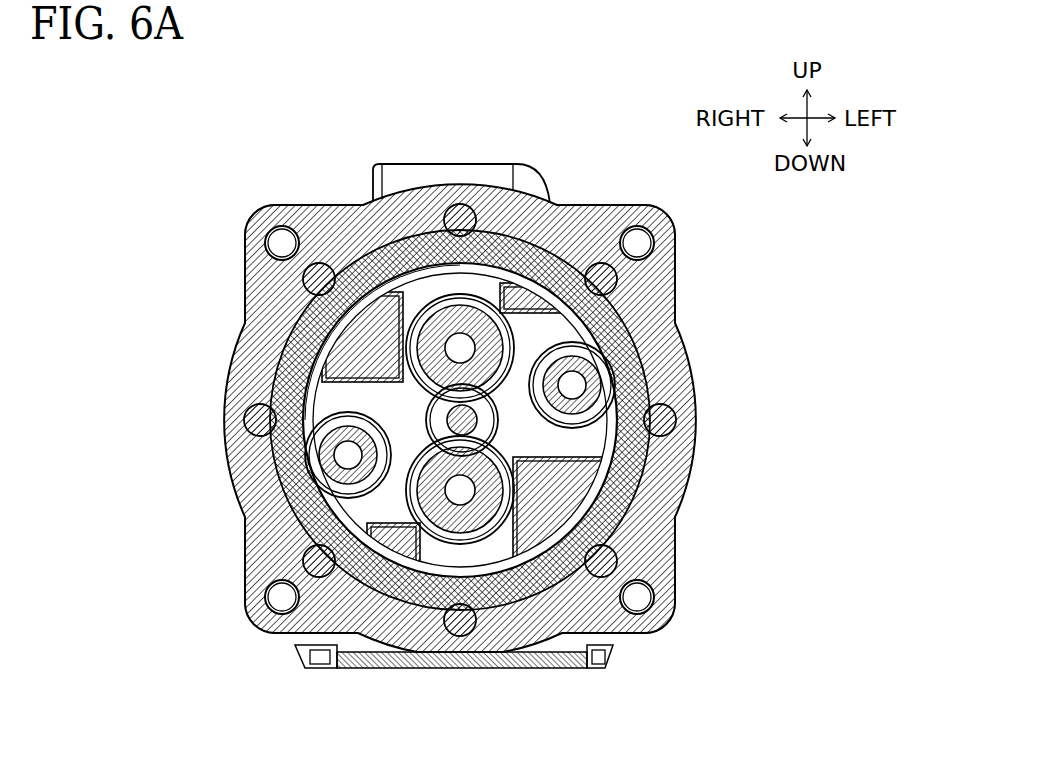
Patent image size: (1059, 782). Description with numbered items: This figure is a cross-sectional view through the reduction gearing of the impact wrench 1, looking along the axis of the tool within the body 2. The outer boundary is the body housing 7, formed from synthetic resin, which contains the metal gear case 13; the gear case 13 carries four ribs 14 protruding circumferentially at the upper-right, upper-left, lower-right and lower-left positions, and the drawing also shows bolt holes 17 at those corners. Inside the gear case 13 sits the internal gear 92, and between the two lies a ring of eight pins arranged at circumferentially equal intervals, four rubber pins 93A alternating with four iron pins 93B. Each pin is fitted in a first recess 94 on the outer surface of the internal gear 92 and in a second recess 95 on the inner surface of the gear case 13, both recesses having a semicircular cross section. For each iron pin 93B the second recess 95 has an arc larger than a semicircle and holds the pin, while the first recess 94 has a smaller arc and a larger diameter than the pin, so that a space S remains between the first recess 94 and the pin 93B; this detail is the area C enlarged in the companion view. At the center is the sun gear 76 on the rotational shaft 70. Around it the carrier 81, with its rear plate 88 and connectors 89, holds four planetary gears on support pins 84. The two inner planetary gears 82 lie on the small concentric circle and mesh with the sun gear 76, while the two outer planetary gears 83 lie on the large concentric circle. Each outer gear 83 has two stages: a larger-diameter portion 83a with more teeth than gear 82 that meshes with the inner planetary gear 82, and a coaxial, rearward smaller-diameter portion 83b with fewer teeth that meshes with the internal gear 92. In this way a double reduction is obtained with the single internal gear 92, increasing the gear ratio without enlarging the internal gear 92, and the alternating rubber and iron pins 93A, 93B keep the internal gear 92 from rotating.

The impact wrench 1 is at (618, 120).
The body 2 is at (541, 166).
The body housing 7 is at (400, 163).
The gear case 13 is at (370, 262).
The ribs 14 is at (262, 210).
The bolt hole 17 is at (265, 244).
The rotational shaft 70 is at (472, 425).
The sun gear 76 is at (600, 487).
The carrier 81 is at (551, 300).
The planetary gears 82 is at (496, 246).
The planetary gears 83 is at (240, 372).
The larger-diameter portion 83a is at (640, 318).
The smaller-diameter portion 83b is at (645, 382).
The support pins 84 is at (415, 238).
The rear plate 88 is at (618, 222).
The connectors 89 is at (582, 250).
The internal gear 92 is at (336, 252).
The pins 93A is at (317, 268).
The pins 93B is at (458, 205).
The first recess 94 is at (472, 226).
The second recess 95 is at (450, 238).
The area C is at (463, 415).
The space S is at (461, 345).